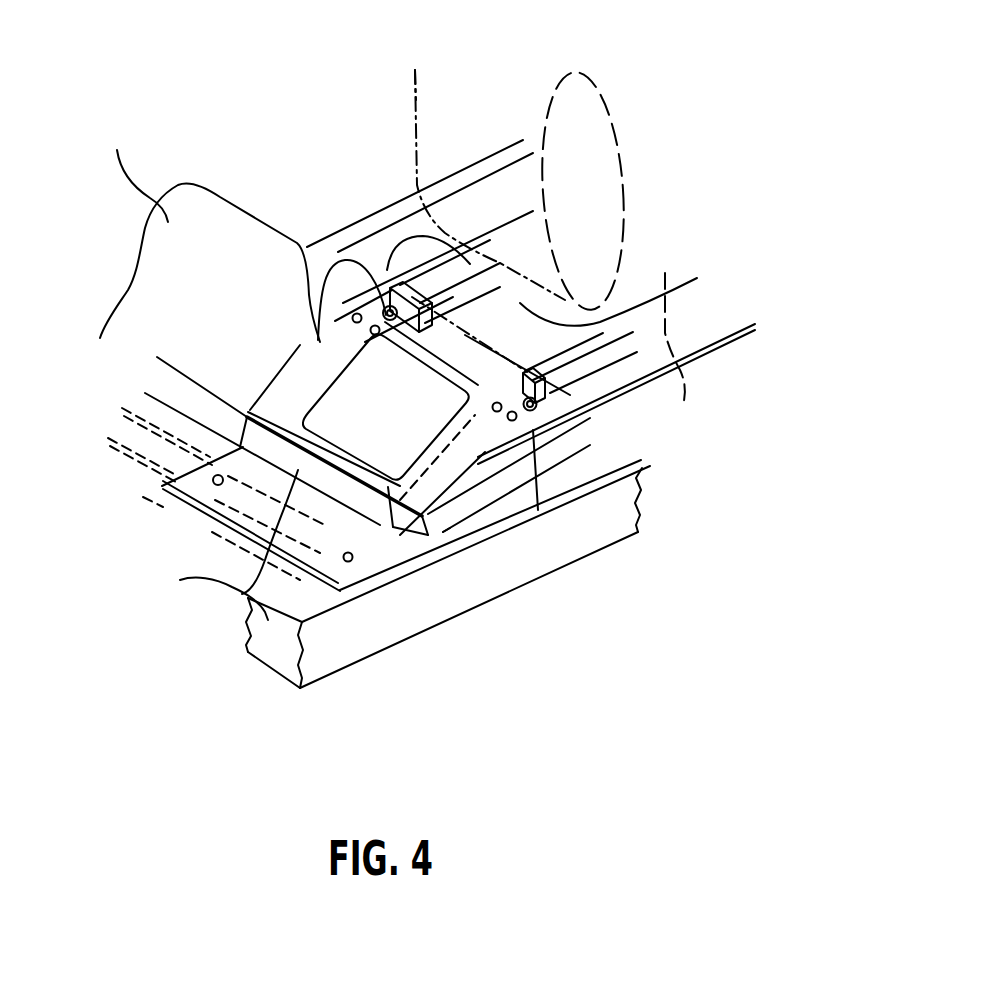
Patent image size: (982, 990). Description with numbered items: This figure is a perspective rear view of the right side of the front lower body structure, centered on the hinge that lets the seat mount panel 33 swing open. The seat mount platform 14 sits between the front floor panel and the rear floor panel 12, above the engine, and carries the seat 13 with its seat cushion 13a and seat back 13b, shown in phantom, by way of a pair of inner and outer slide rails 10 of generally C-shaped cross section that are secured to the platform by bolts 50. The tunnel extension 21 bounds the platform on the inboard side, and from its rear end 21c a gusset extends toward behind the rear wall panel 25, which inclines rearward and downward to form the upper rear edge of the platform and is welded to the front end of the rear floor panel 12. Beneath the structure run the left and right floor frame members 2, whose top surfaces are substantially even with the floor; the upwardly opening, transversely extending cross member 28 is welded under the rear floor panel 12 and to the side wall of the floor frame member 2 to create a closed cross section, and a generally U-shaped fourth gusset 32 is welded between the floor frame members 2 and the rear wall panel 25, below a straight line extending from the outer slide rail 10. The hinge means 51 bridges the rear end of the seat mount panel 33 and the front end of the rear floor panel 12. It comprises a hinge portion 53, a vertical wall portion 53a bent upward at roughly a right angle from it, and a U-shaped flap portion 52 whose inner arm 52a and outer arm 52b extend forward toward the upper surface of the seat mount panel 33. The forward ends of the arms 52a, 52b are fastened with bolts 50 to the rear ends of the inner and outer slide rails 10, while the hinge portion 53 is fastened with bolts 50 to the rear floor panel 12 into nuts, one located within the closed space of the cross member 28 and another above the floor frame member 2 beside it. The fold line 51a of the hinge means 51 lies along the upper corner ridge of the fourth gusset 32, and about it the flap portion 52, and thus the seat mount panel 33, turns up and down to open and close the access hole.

The floor frame member 2 is at (607, 528).
The slide rail 10 is at (453, 300).
The rear floor panel 12 is at (295, 597).
The seat 13 is at (400, 155).
The seat cushion 13a is at (678, 357).
The seat back 13b is at (410, 107).
The seat mount platform 14 is at (715, 395).
The tunnel extension 21 is at (268, 192).
The rear end of tunnel extension 21c is at (132, 167).
The rear wall panel 25 is at (163, 331).
The cross member 28 is at (120, 485).
The fourth gusset 32 is at (470, 453).
The seat mount panel 33 is at (440, 357).
The bolt 50 is at (390, 305).
The hinge means 51 is at (280, 350).
The fold line 51a is at (380, 522).
The flap portion 52 is at (310, 350).
The inner arm 52a is at (288, 397).
The outer arm 52b is at (473, 452).
The hinge portion 53 is at (234, 496).
The vertical wall portion 53a is at (247, 597).